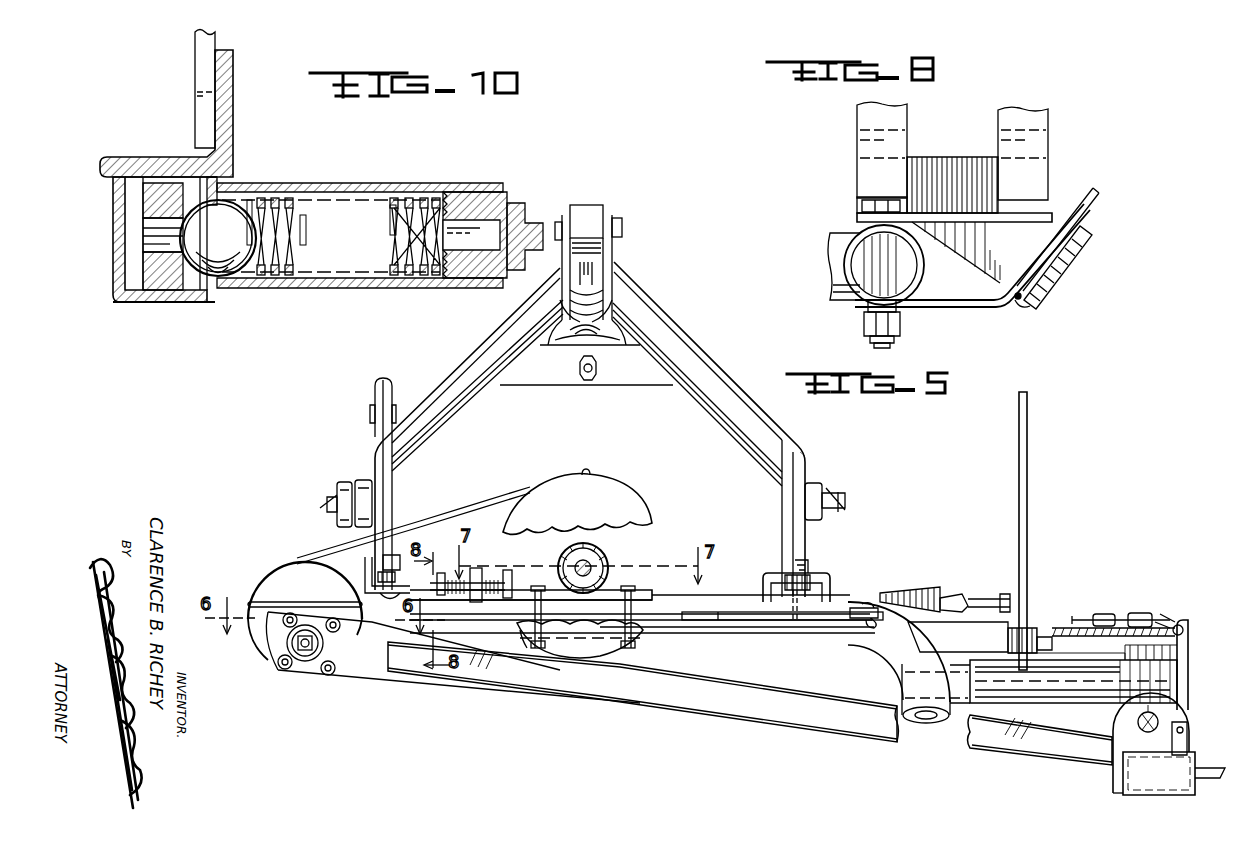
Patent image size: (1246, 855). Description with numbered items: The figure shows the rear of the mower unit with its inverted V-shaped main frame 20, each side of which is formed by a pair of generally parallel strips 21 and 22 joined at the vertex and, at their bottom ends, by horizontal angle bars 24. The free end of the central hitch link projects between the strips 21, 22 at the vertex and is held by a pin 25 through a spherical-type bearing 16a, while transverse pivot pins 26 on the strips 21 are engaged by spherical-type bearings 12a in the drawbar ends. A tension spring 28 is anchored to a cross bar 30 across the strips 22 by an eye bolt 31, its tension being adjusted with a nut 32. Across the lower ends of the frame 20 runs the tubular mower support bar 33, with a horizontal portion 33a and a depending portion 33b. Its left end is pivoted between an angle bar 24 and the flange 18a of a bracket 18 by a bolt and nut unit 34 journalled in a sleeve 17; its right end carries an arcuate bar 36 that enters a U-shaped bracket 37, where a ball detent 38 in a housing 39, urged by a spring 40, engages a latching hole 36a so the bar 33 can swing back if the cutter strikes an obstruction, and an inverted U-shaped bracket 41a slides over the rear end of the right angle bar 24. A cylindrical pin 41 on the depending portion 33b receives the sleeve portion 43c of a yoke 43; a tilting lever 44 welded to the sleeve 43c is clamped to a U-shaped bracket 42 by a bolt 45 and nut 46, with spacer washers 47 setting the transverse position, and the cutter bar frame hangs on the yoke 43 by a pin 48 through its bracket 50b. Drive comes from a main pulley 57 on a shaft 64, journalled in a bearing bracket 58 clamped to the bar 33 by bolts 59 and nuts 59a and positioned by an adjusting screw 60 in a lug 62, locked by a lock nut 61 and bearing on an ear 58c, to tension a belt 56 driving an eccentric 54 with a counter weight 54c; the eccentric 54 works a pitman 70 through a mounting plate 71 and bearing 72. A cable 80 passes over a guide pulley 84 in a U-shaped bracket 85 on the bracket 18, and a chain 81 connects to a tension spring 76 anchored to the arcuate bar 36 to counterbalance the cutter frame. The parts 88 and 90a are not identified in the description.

In FIG. 5, the spherical-type bearing 12a is at (362, 480).
In FIG. 5, the spherical-type bearing 16a is at (588, 212).
In FIG. 8, the sleeve 17 is at (858, 232).
In FIG. 5, the sleeve 17 is at (380, 598).
In FIG. 8, the bracket 18 is at (948, 250).
In FIG. 8, the flange portion 18a is at (864, 314).
In FIG. 5, the main frame 20 is at (808, 462).
In FIG. 10, the strip 21 is at (200, 66).
In FIG. 8, the strip 21 is at (1045, 143).
In FIG. 5, the strip 21 is at (462, 366).
In FIG. 8, the strip 22 is at (900, 150).
In FIG. 5, the strip 22 is at (450, 430).
In FIG. 10, the angle bar 24 is at (234, 146).
In FIG. 8, the angle bar 24 is at (1050, 200).
In FIG. 5, the angle bar 24 is at (362, 566).
In FIG. 5, the pin 25 is at (624, 229).
In FIG. 5, the pivot pin 26 is at (330, 500).
In FIG. 5, the tension spring 28 is at (620, 310).
In FIG. 5, the cross bar 30 is at (655, 383).
In FIG. 5, the eye bolt 31 is at (590, 378).
In FIG. 5, the nut 32 is at (583, 378).
In FIG. 8, the mower support bar 33 is at (920, 287).
In FIG. 5, the mower support bar 33 is at (736, 592).
In FIG. 5, the horizontal portion 33a is at (780, 634).
In FIG. 5, the depending portion 33b is at (910, 697).
In FIG. 8, the bolt and nut unit 34 is at (884, 348).
In FIG. 5, the bolt and nut unit 34 is at (394, 570).
In FIG. 10, the arcuate bar 36 is at (138, 203).
In FIG. 10, the locking hole 36a is at (150, 260).
In FIG. 10, the U-shaped bracket 37 is at (186, 304).
In FIG. 10, the ball detent 38 is at (236, 272).
In FIG. 10, the housing 39 is at (372, 185).
In FIG. 10, the spring 40 is at (310, 270).
In FIG. 5, the cylindrical pin 41 is at (956, 708).
In FIG. 5, the bracket 41a is at (830, 586).
In FIG. 5, the U-shaped bracket 42 is at (970, 604).
In FIG. 5, the yoke 43 is at (1186, 645).
In FIG. 5, the sleeve portion 43c is at (1083, 668).
In FIG. 5, the tilting lever 44 is at (1028, 472).
In FIG. 5, the clamping bolt 45 is at (1043, 628).
In FIG. 5, the nut 46 is at (1044, 646).
In FIG. 5, the spacer washers 47 is at (1008, 643).
In FIG. 5, the pin 48 is at (1172, 714).
In FIG. 5, the upstanding bracket 50b is at (1115, 727).
In FIG. 5, the eccentric 54 is at (268, 570).
In FIG. 5, the counter weight 54c is at (305, 594).
In FIG. 5, the belt 56 is at (505, 508).
In FIG. 5, the main driving pulley 57 is at (640, 511).
In FIG. 5, the bearing bracket 58 is at (605, 562).
In FIG. 5, the upstanding ear 58c is at (515, 572).
In FIG. 5, the bolts 59 is at (640, 641).
In FIG. 5, the nuts 59a is at (532, 640).
In FIG. 5, the adjusting screw 60 is at (442, 574).
In FIG. 5, the lock nut 61 is at (477, 569).
In FIG. 5, the upstanding lug 62 is at (473, 594).
In FIG. 5, the shaft 64 is at (593, 572).
In FIG. 5, the pitman 70 is at (755, 712).
In FIG. 5, the mounting plate 71 is at (376, 678).
In FIG. 5, the bearing 72 is at (307, 662).
In FIG. 5, the tension spring 76 is at (930, 594).
In FIG. 8, the cable 80 is at (1082, 212).
In FIG. 5, the cable 80 is at (1100, 636).
In FIG. 5, the chain 81 is at (1142, 620).
In FIG. 8, the guide pulley 84 is at (1026, 304).
In FIG. 8, the U-shaped bracket 85 is at (1078, 250).
In FIG. 5, the hook 88 is at (870, 604).
In FIG. 5, the pulley 90a is at (345, 485).